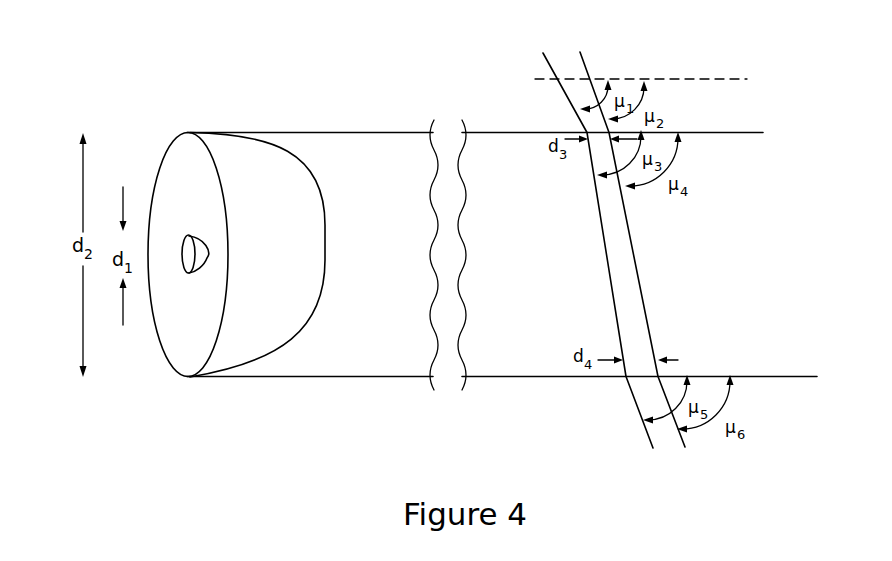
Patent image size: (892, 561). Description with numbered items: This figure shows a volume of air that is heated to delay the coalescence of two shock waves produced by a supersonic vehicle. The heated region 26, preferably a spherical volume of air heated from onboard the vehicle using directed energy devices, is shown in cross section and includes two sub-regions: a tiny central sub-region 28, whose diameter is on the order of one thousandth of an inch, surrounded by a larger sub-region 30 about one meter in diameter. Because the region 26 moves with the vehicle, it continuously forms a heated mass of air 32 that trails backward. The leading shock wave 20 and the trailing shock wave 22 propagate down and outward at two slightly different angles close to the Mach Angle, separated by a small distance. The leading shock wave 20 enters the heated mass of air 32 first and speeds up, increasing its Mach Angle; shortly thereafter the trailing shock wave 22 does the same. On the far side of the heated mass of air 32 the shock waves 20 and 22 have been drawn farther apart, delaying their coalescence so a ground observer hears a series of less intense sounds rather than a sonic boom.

The leading shock wave 20 is at (545, 58).
The trailing shock wave 22 is at (585, 62).
The region 26 is at (146, 151).
The sub-region 28 is at (191, 253).
The sub-region 30 is at (178, 376).
The heated mass of air 32 is at (346, 132).